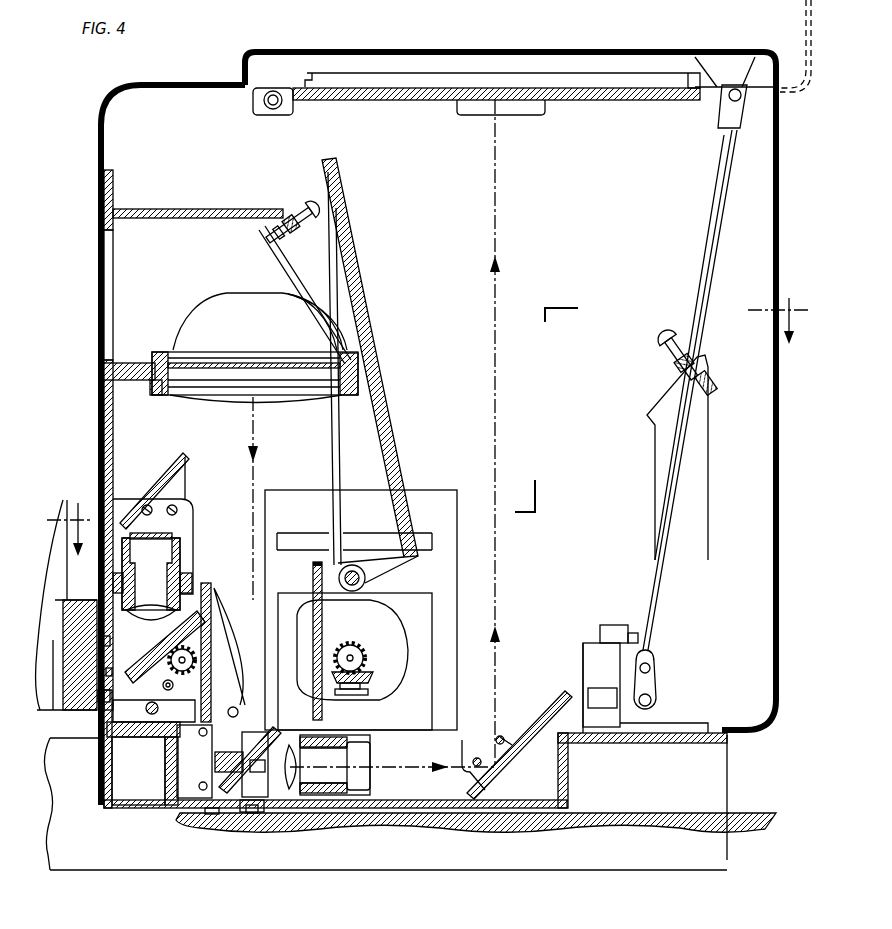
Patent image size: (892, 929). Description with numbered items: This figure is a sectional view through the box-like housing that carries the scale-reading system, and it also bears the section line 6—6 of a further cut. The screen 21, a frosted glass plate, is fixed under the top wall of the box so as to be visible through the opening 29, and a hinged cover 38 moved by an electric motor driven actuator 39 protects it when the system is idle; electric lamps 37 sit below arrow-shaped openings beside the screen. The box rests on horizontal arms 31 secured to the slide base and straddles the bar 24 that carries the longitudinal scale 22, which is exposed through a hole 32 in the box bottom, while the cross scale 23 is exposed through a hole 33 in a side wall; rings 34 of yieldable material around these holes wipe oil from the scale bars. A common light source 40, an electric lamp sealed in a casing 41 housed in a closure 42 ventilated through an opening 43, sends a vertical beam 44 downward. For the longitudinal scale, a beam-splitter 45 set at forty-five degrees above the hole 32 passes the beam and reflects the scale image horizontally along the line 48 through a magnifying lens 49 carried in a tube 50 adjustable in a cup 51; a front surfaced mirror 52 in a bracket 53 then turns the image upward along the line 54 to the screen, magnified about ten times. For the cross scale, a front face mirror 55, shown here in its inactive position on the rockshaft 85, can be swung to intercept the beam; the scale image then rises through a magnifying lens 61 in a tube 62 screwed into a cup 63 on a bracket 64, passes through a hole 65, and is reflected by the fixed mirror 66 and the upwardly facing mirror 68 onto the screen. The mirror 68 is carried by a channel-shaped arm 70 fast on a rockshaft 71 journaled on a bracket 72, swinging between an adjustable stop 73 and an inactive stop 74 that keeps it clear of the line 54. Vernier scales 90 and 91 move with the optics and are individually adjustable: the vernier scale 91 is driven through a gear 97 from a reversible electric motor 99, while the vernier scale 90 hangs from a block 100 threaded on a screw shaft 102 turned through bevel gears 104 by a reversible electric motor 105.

The section line 6- 6 is at (427, 417).
The screen 21 is at (435, 100).
The longitudinal scale 22 is at (601, 814).
The cross scale 23 is at (120, 675).
The bar 24 is at (667, 822).
The opening 29 is at (312, 76).
The horizontal arms 31 is at (108, 858).
The hole 32 is at (265, 813).
The hole 33 is at (110, 641).
The rings 34 is at (98, 703).
The electric lamps 37 is at (252, 104).
The cover 38 is at (462, 55).
The electric motor driven actuator 39 is at (584, 661).
The light source 40 is at (187, 340).
The casing 41 is at (215, 309).
The closure 42 is at (218, 209).
The opening 43 is at (103, 303).
The beam of light 44 is at (256, 448).
The beam-splitter 45 is at (278, 730).
The line 48 is at (392, 758).
The magnifying lens 49 is at (298, 761).
The tube 50 is at (338, 781).
The cup 51 is at (372, 748).
The front surfaced mirror 52 is at (547, 728).
The bracket 53 is at (494, 740).
The line 54 is at (498, 606).
The front face mirror 55 is at (211, 589).
The magnifying lens 61 is at (152, 614).
The tube 62 is at (175, 579).
The cup 63 is at (180, 554).
The bracket 64 is at (189, 509).
The hole 65 is at (155, 537).
The mirror 66 is at (160, 472).
The mirror 68 is at (368, 315).
The channel-shaped arm 70 is at (338, 457).
The rockshaft 71 is at (352, 566).
The bracket 72 is at (313, 580).
The adjustable stop 73 is at (664, 340).
The stop 74 is at (312, 203).
The rockshaft 85 is at (232, 707).
The vernier scale 90 is at (253, 822).
The vernier scale 91 is at (107, 662).
The gear 97 is at (260, 772).
The reversible electric motor 99 is at (231, 616).
The block 100 is at (250, 735).
The screw shaft 102 is at (215, 755).
The bevel gears 104 is at (378, 668).
The reversible electric motor 105 is at (388, 628).